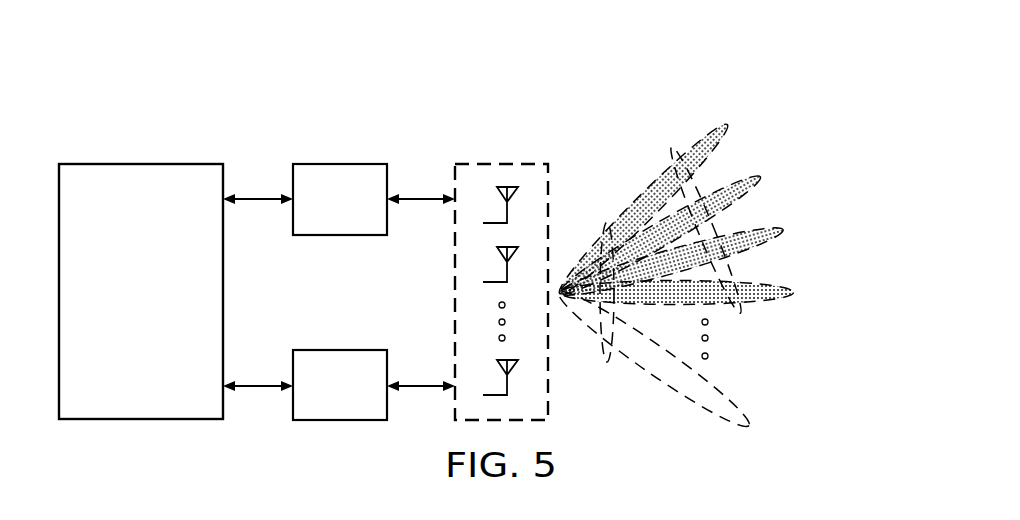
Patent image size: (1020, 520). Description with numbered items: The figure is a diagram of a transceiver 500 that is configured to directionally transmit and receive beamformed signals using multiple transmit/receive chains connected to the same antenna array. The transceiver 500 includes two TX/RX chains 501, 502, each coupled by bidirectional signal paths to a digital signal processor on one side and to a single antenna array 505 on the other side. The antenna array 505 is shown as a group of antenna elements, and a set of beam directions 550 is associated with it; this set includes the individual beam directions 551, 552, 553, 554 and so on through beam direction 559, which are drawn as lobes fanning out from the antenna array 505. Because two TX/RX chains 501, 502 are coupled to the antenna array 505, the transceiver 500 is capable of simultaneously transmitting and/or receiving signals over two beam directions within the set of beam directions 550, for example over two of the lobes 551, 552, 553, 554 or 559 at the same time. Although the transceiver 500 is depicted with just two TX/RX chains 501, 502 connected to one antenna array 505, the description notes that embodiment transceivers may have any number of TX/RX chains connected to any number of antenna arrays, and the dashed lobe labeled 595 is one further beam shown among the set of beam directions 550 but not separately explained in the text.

The transceiver 500 is at (214, 72).
The TX/RX chain 501 is at (338, 163).
The TX/RX chain 502 is at (338, 421).
The antenna array 505 is at (521, 152).
The set of beam directions 550 is at (607, 218).
The beam direction 551 is at (727, 125).
The beam direction 552 is at (760, 177).
The beam direction 553 is at (783, 230).
The beam direction 554 is at (793, 292).
The beam direction 559 is at (648, 372).
The beam 595 is at (672, 148).